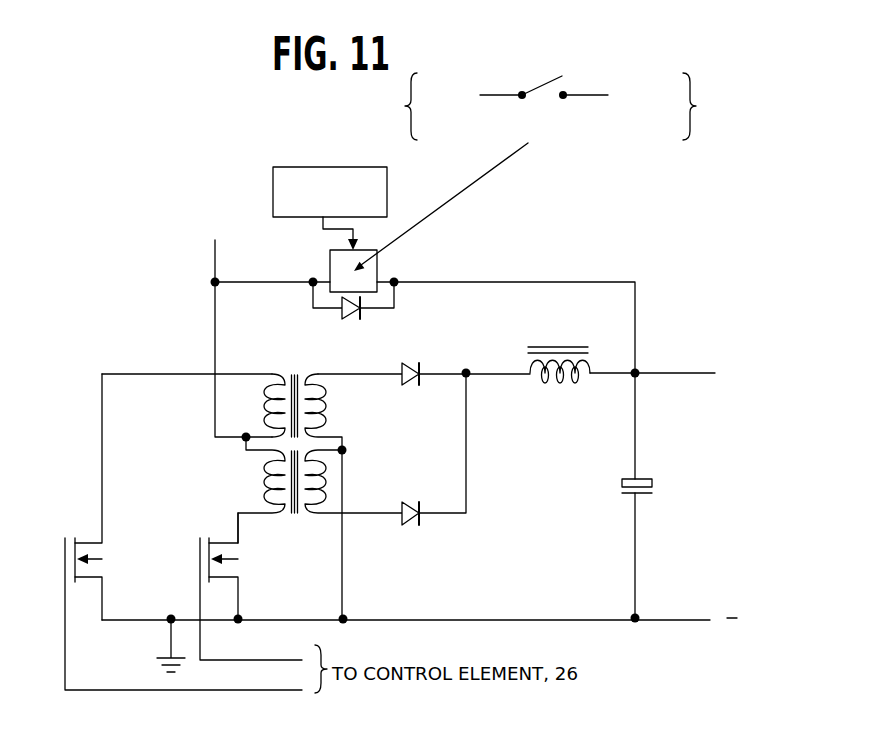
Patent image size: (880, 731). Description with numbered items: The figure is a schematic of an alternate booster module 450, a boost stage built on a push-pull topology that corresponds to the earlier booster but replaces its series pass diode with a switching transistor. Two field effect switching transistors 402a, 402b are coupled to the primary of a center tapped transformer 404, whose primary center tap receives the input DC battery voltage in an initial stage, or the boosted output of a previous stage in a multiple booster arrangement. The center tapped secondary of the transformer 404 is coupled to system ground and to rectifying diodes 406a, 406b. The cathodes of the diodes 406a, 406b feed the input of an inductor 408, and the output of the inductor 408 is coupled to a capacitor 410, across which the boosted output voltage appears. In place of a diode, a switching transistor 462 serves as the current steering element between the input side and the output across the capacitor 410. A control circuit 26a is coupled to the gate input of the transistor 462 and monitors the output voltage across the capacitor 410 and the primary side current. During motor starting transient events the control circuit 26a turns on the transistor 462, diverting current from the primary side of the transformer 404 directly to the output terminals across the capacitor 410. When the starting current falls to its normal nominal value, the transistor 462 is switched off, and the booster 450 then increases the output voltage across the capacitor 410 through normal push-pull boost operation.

The control circuit 26a is at (351, 167).
The switching transistor 462 is at (432, 241).
The booster module 450 is at (677, 215).
The center tapped transformer 404 is at (316, 355).
The rectifying diode 406a is at (412, 362).
The rectifying diode 406b is at (404, 528).
The inductor 408 is at (552, 383).
The capacitor 410 is at (650, 492).
The field effect switching transistor 402a is at (82, 540).
The field effect switching transistor 402b is at (227, 540).